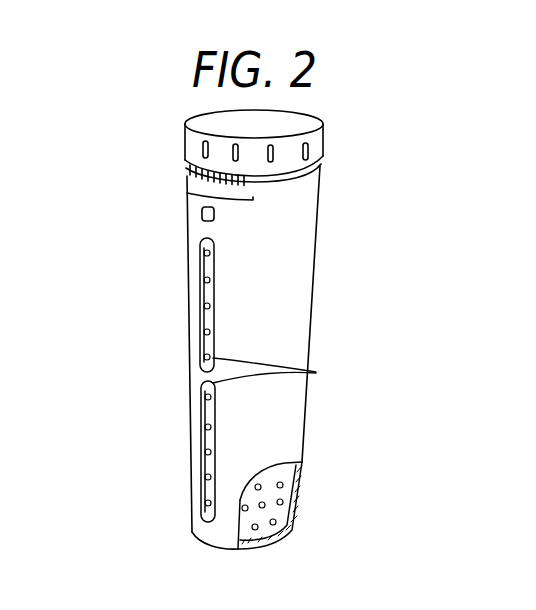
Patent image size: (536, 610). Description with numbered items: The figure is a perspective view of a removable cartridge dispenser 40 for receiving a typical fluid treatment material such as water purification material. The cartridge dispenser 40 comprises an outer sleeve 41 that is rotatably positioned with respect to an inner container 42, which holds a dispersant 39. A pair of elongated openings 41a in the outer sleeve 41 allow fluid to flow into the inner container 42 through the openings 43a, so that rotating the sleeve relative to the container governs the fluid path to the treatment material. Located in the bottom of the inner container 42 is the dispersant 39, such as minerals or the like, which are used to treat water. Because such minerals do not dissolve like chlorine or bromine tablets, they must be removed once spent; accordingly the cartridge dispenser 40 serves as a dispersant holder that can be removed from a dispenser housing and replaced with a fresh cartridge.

The dispersant 39 is at (266, 505).
The cartridge dispenser 40 is at (323, 278).
The outer sleeve 41 is at (293, 227).
The elongated openings 41a is at (290, 374).
The inner container 42 is at (200, 265).
The openings 43a is at (204, 430).